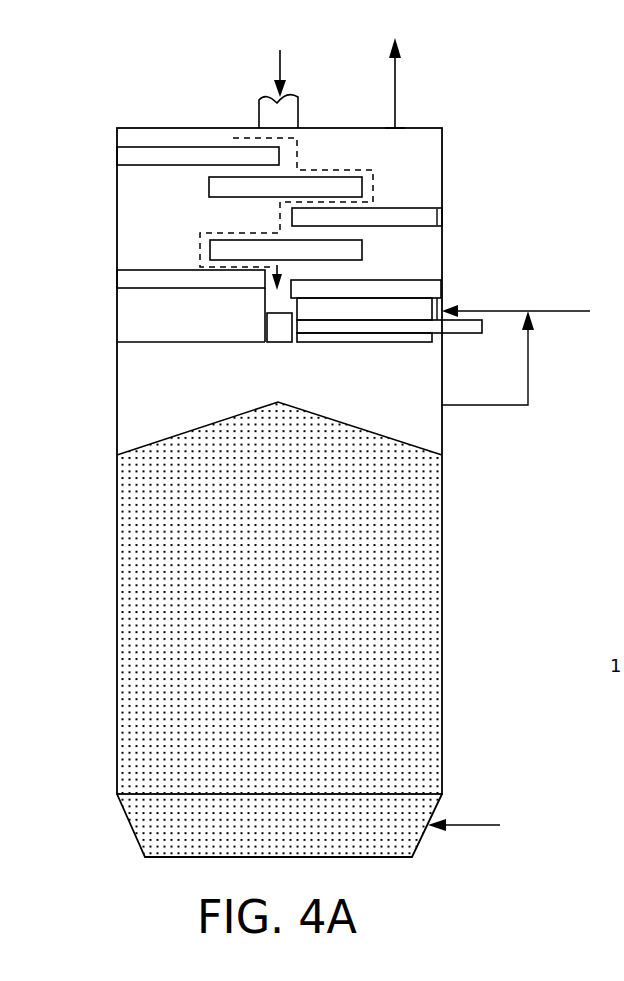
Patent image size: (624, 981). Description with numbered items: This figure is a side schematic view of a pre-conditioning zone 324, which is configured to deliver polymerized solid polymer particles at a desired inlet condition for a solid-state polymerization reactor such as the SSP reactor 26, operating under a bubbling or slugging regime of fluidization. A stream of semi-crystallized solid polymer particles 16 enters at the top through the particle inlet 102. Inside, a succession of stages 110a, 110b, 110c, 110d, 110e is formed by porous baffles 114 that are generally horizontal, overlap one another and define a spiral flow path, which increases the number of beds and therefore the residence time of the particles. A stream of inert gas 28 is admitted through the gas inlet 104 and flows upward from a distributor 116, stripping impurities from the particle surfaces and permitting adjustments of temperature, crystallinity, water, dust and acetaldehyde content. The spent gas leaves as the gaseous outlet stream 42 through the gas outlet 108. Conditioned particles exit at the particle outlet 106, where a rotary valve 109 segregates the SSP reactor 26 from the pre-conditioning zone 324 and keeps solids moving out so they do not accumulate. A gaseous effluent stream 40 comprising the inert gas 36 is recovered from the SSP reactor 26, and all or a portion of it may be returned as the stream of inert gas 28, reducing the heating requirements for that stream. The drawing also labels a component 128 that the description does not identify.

The stream of semi-crystallized solid polymer particles 16 is at (282, 70).
The particle inlet 102 is at (259, 120).
The gas outlet 108 is at (392, 127).
The gaseous outlet stream 42 is at (397, 82).
The pre-conditioning zone 324 is at (545, 96).
The stage 110a is at (122, 158).
The stage 110b is at (212, 187).
The stage 110c is at (442, 213).
The stage 110d is at (362, 250).
The stage 110e is at (122, 282).
The porous baffle 114 is at (409, 207).
The baffle mount 128 is at (437, 217).
The gas inlet 104 is at (442, 300).
The stream of inert gas 28 is at (528, 308).
The distributor 116 is at (120, 313).
The particle outlet 106 is at (278, 293).
The rotary valve 109 is at (278, 333).
The gaseous effluent stream 40 is at (487, 406).
The SSP reactor 26 is at (120, 620).
The inert gas 36 is at (470, 826).